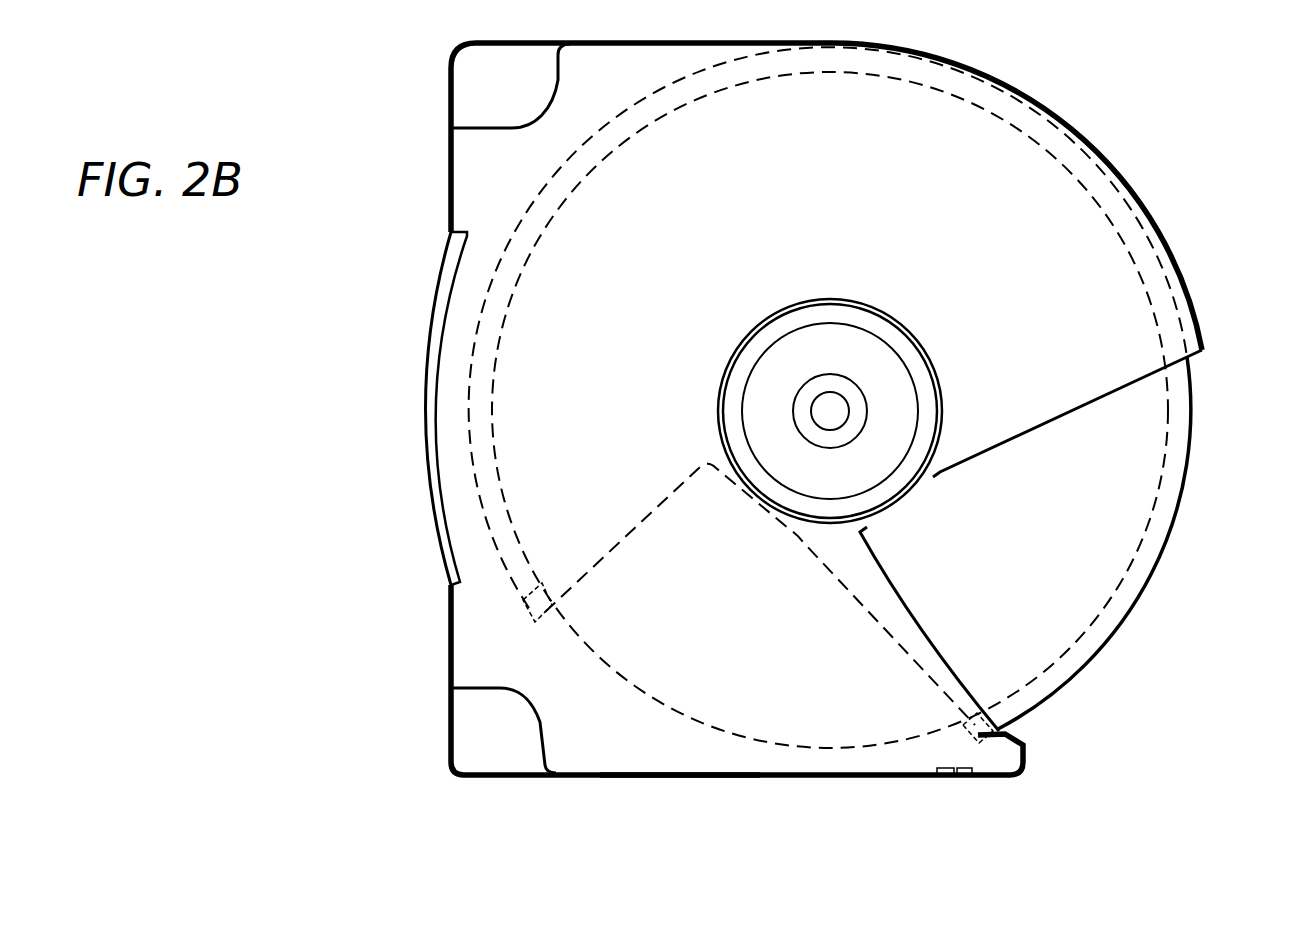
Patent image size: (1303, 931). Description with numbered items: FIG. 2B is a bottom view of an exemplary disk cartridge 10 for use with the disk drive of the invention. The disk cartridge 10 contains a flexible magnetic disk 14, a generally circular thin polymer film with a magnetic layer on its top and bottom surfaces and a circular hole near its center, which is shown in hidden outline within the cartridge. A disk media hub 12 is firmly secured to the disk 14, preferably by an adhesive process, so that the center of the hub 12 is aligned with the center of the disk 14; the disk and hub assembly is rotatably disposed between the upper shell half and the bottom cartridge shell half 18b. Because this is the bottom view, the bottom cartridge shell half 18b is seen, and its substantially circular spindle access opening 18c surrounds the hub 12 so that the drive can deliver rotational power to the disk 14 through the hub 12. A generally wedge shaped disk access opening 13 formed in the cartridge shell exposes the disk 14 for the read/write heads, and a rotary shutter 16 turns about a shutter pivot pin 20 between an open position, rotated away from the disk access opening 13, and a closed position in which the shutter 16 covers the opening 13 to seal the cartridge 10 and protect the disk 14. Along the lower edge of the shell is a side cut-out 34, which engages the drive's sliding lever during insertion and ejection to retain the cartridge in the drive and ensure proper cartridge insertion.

The disk cartridge 10 is at (216, 752).
The disk media hub 12 is at (755, 345).
The disk access opening 13 is at (1232, 357).
The flexible magnetic disk 14 is at (1083, 540).
The rotary shutter 16 is at (1190, 434).
The bottom cartridge shell half 18b is at (658, 748).
The spindle access opening 18c is at (828, 298).
The shutter pivot pin 20 is at (836, 407).
The side cut-out 34 is at (957, 778).